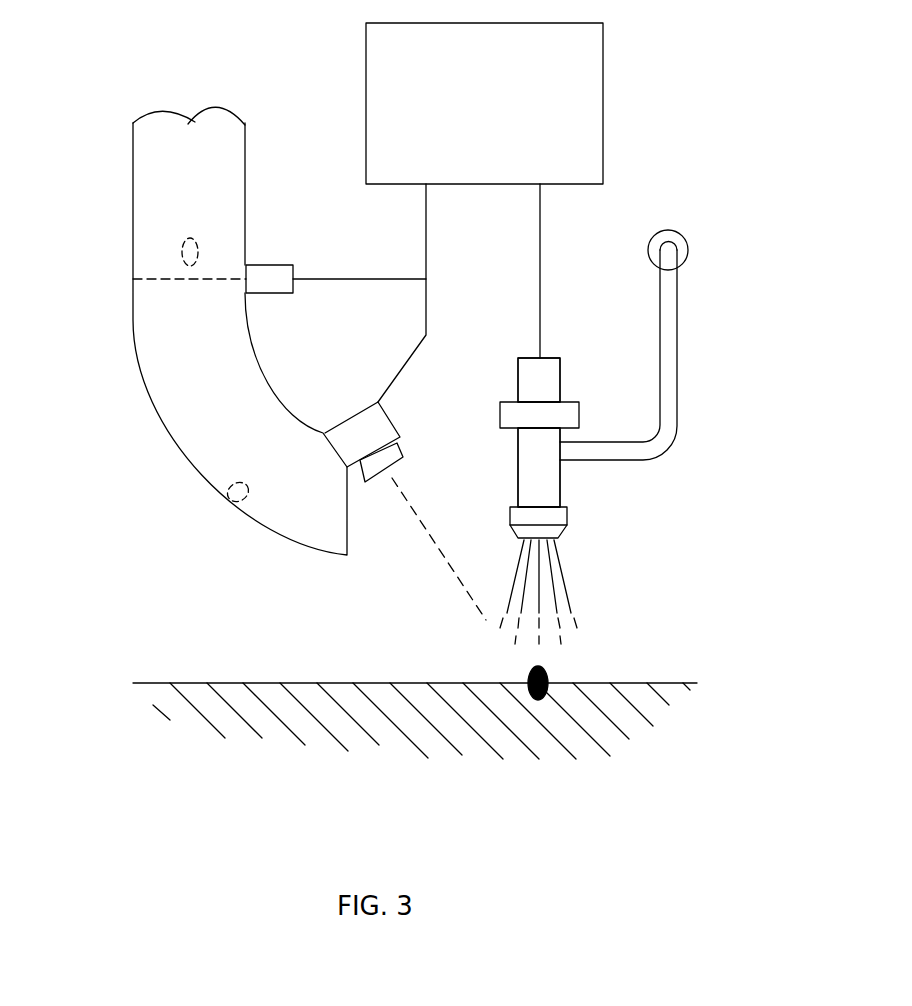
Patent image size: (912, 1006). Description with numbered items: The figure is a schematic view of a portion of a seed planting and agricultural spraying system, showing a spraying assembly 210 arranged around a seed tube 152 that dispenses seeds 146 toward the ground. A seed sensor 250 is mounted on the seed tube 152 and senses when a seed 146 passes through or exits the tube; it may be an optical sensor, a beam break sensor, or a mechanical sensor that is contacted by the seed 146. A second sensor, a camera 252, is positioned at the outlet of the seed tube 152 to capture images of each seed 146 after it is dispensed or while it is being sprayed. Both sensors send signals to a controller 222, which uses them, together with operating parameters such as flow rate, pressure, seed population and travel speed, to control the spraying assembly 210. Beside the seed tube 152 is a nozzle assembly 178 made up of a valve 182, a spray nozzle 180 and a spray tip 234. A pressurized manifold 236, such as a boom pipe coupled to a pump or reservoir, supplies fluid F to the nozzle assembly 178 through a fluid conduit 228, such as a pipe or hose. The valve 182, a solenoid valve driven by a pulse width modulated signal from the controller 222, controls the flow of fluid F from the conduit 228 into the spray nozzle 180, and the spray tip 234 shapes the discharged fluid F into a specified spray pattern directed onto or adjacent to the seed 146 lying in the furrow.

The spraying assembly 210 is at (667, 117).
The controller 222 is at (507, 114).
The seed tube 152 is at (147, 390).
The seed sensor 250 is at (262, 265).
The camera 252 is at (350, 417).
The nozzle assembly 178 is at (522, 355).
The valve 182 is at (560, 368).
The spray nozzle 180 is at (518, 445).
The spray tip 234 is at (510, 518).
The fluid F is at (564, 580).
The fluid conduit 228 is at (677, 305).
The manifold 236 is at (680, 232).
The seed 146 is at (182, 252).